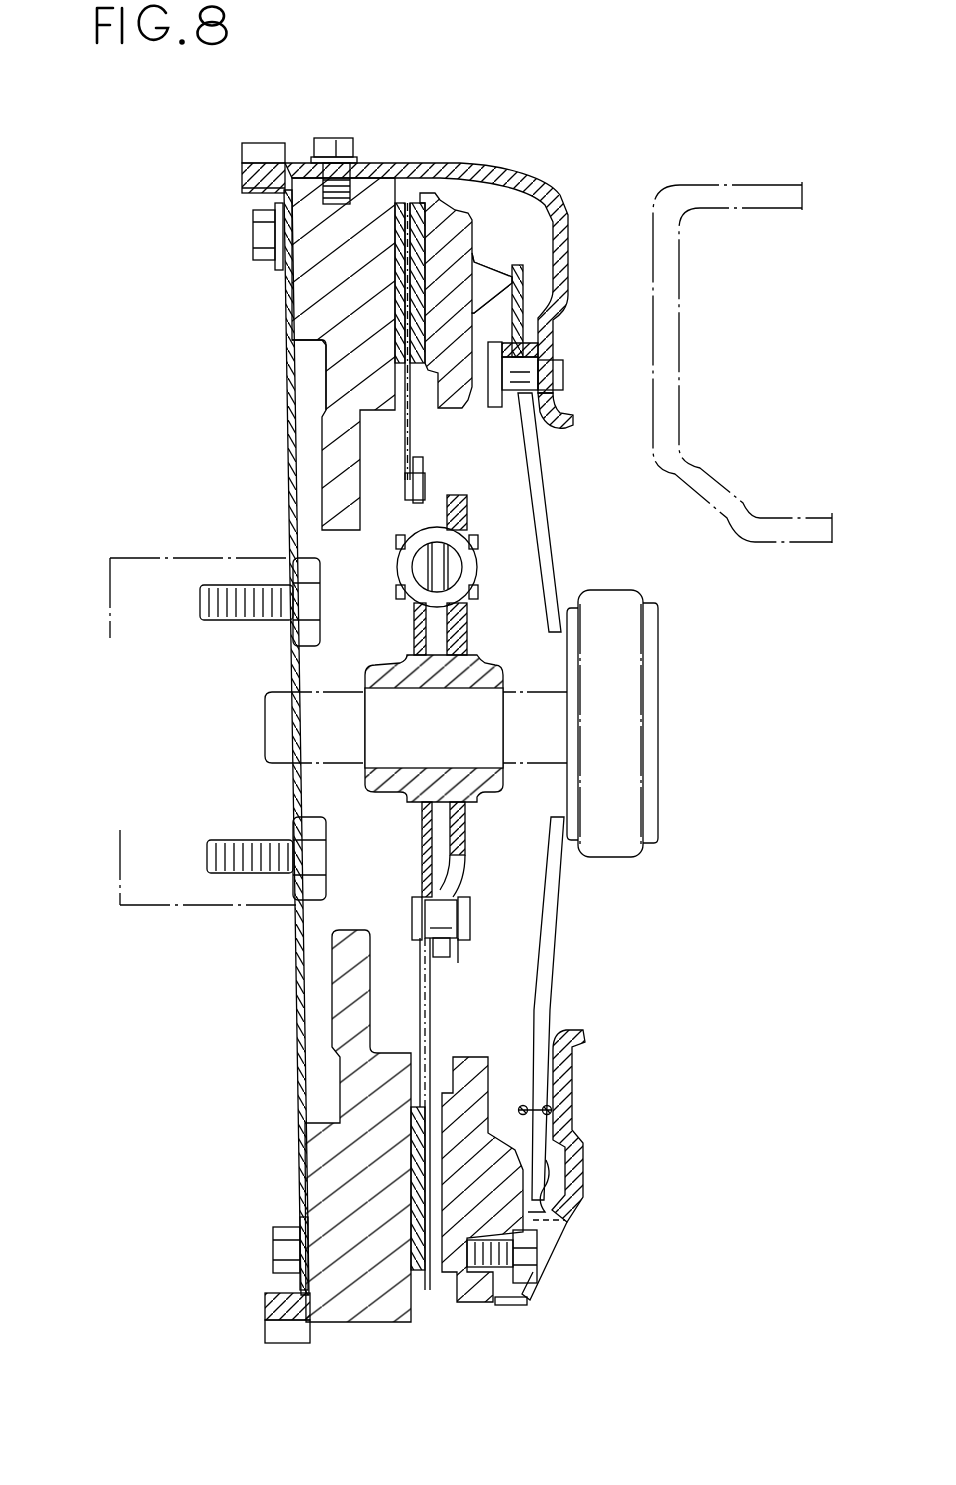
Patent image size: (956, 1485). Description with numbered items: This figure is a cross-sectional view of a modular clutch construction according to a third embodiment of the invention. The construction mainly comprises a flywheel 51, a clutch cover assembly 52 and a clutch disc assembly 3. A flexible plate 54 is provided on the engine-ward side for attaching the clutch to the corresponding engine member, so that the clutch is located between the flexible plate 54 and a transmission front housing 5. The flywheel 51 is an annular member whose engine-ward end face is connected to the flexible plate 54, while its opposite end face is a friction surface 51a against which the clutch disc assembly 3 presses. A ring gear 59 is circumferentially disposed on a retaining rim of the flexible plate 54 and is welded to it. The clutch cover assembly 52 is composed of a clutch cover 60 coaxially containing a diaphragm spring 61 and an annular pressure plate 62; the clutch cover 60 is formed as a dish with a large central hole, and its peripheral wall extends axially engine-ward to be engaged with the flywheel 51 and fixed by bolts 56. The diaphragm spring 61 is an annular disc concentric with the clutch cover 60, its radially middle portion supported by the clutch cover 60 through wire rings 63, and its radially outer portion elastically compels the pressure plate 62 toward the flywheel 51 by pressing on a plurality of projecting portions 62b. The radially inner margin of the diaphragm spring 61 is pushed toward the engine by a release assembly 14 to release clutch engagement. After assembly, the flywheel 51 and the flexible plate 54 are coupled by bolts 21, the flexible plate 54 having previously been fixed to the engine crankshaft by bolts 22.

The clutch disc assembly 3 is at (463, 518).
The transmission front housing 5 is at (680, 306).
The release assembly 14 is at (658, 645).
The bolts 21 is at (255, 232).
The bolts 22 is at (223, 620).
The flywheel 51 is at (305, 295).
The friction surface 51a is at (335, 380).
The clutch cover assembly 52 is at (603, 542).
The flexible plate 54 is at (290, 332).
The bolts 56 is at (333, 140).
The ring gear 59 is at (252, 157).
The clutch cover 60 is at (560, 255).
The diaphragm spring 61 is at (543, 480).
The pressure plate 62 is at (450, 215).
The projecting portions 62b is at (498, 280).
The wire rings 63 is at (550, 337).